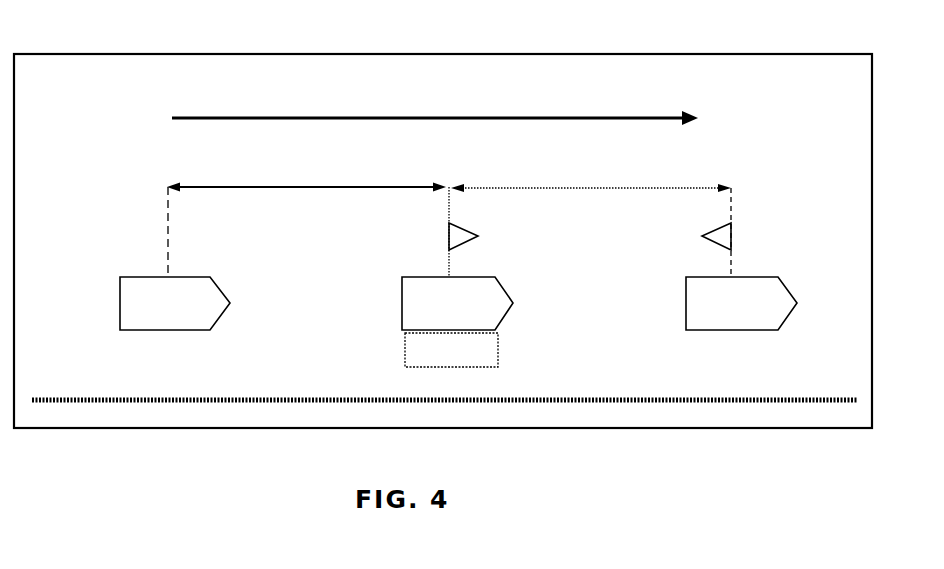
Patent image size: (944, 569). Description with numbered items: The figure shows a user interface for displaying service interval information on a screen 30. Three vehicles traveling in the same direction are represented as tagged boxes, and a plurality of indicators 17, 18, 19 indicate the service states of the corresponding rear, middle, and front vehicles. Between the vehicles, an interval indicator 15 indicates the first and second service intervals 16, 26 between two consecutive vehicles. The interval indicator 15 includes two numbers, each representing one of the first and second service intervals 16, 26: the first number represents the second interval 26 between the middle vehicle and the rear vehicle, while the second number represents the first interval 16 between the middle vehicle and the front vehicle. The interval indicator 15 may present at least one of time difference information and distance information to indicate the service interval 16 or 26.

The screen 30 is at (72, 36).
The second service interval 26 is at (285, 186).
The first service interval 16 is at (591, 187).
The indicator 17 is at (196, 277).
The indicator 18 is at (481, 277).
The indicator 19 is at (750, 277).
The interval indicator 15 is at (498, 352).